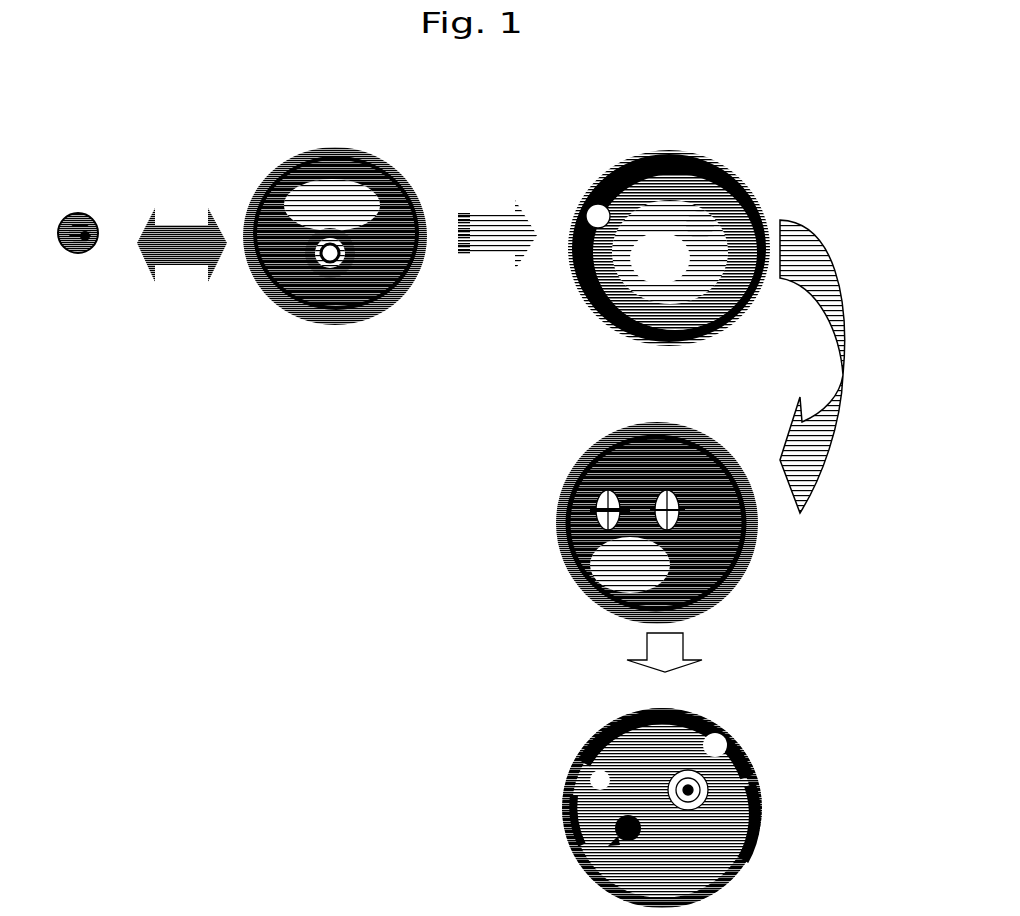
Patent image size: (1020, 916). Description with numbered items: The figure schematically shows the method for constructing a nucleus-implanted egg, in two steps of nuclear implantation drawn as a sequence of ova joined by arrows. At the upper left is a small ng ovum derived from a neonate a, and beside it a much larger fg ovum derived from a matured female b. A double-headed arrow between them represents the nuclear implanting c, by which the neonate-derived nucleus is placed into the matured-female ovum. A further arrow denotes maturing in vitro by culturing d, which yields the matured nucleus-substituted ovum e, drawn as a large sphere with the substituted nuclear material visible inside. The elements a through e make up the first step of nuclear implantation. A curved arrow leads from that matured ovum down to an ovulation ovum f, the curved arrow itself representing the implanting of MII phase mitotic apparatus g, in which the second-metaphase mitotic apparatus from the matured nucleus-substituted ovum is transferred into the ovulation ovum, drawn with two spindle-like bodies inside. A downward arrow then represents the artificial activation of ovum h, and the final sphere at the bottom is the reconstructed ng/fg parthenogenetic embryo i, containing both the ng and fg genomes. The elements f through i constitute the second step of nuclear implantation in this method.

The ng ovum derived from a neonate a is at (78, 212).
The fg ovum derived from a matured female b is at (335, 219).
The nuclear implanting c is at (182, 264).
The maturing in vitro by culturing d is at (497, 261).
The matured nucleus-substituted ovum e is at (669, 230).
The ovulation ovum f is at (636, 523).
The implanting of MII phase mitotic apparatus g is at (834, 366).
The artificial activation of ovum h is at (645, 653).
The reconstructed ng/fg parthenogenetic embryo i is at (635, 808).